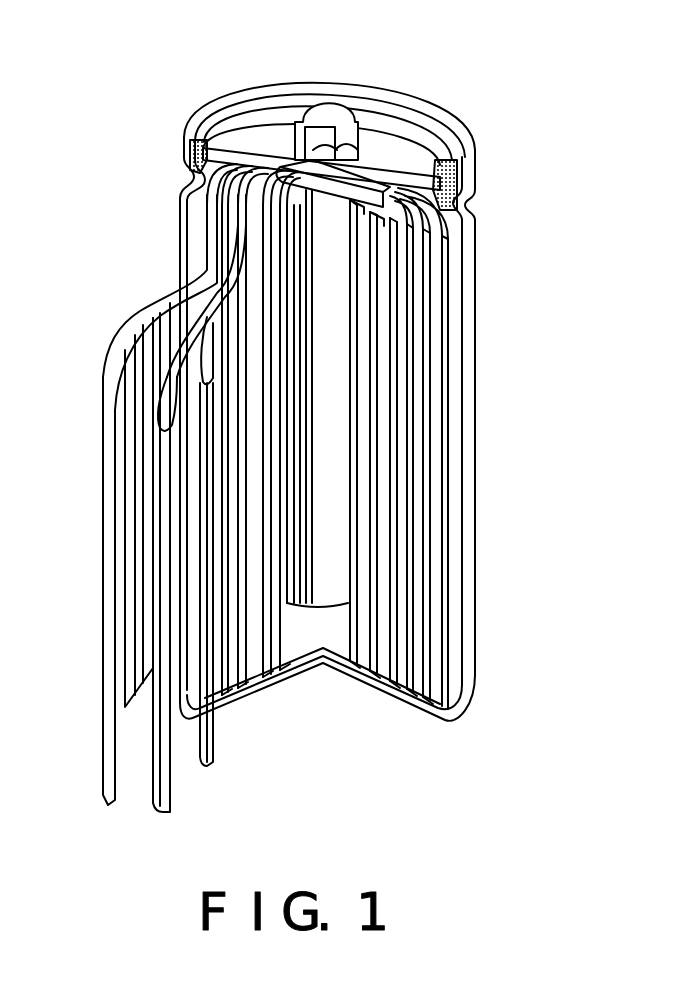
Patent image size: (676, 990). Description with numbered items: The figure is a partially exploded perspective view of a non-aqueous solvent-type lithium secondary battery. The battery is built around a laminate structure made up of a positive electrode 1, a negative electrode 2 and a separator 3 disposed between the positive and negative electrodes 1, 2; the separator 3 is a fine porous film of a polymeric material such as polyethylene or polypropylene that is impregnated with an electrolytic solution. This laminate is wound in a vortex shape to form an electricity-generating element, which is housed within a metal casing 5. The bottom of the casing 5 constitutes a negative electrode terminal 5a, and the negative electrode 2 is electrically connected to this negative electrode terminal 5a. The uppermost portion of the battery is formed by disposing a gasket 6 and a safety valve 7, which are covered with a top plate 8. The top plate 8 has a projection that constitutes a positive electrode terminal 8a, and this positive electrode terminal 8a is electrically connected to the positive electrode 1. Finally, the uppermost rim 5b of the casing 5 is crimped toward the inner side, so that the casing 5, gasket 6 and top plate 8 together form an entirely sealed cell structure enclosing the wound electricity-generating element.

The positive electrode 1 is at (210, 746).
The negative electrode 2 is at (107, 470).
The separator 3 is at (160, 793).
The metal casing 5 is at (475, 537).
The negative electrode terminal 5a is at (257, 692).
The uppermost rim 5b is at (462, 143).
The gasket 6 is at (187, 150).
The safety valve 7 is at (313, 140).
The top plate 8 is at (400, 157).
The positive electrode terminal 8a is at (330, 112).